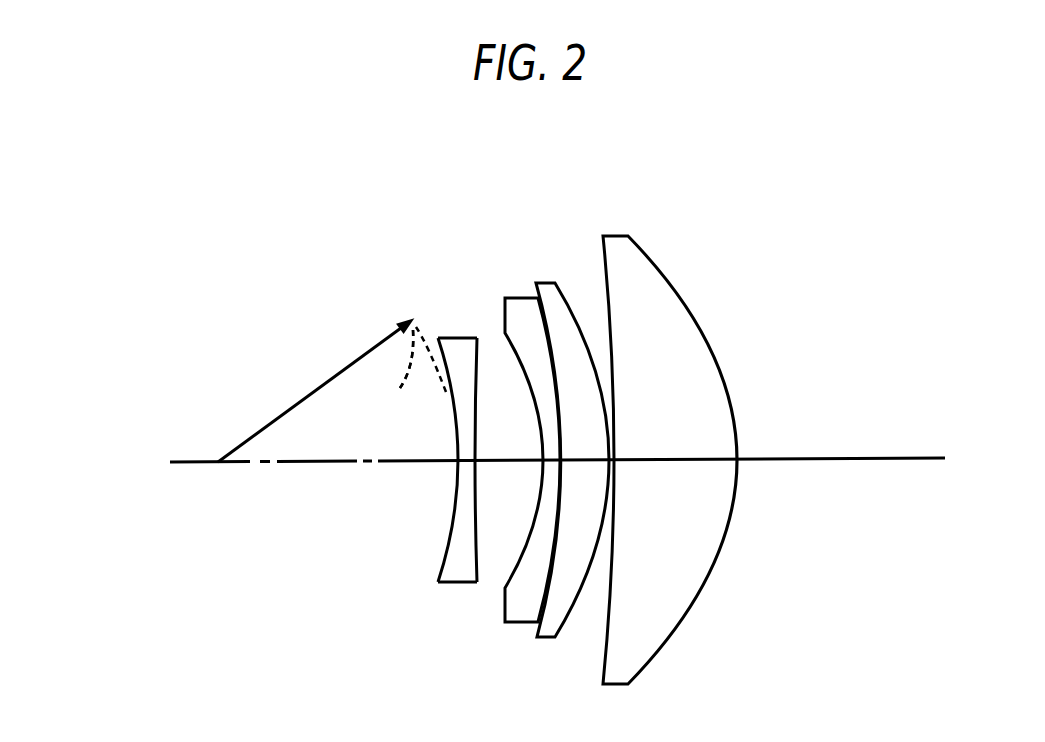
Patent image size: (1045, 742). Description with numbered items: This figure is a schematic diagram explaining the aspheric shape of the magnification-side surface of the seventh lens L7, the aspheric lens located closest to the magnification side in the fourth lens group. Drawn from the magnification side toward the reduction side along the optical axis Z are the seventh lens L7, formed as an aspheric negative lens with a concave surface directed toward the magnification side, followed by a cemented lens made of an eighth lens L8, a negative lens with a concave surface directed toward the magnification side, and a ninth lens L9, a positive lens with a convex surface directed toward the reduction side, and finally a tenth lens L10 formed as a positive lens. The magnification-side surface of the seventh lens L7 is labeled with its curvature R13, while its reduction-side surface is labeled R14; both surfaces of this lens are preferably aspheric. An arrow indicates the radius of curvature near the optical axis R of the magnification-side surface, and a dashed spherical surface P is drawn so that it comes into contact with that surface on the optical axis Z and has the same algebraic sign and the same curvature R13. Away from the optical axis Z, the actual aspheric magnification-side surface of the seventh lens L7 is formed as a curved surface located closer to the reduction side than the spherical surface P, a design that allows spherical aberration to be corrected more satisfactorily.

The seventh lens L7 is at (463, 425).
The eighth lens L8 is at (517, 302).
The ninth lens L9 is at (552, 287).
The tenth lens L10 is at (620, 240).
The curvature of the magnification-side surface of the seventh lens R13 is at (457, 459).
The image-side surface of seventh lens (radius of curvature R14) R14 is at (499, 460).
The spherical surface P is at (397, 371).
The optical axis Z is at (320, 464).
The radius of curvature near optical axis R is at (244, 387).